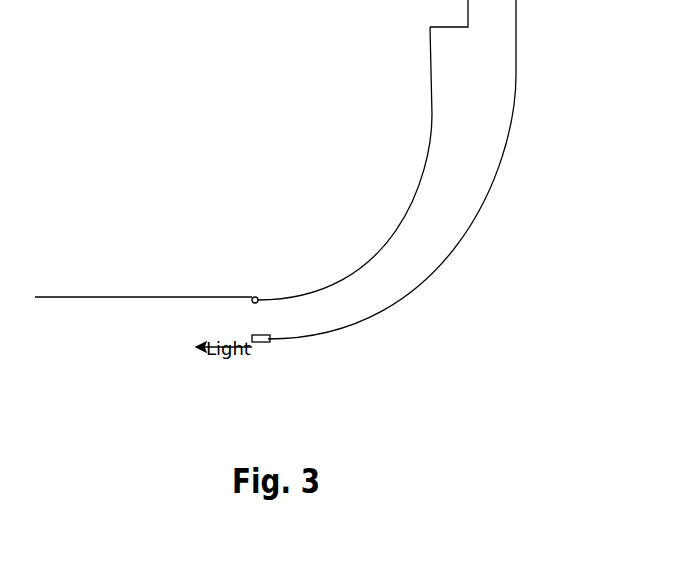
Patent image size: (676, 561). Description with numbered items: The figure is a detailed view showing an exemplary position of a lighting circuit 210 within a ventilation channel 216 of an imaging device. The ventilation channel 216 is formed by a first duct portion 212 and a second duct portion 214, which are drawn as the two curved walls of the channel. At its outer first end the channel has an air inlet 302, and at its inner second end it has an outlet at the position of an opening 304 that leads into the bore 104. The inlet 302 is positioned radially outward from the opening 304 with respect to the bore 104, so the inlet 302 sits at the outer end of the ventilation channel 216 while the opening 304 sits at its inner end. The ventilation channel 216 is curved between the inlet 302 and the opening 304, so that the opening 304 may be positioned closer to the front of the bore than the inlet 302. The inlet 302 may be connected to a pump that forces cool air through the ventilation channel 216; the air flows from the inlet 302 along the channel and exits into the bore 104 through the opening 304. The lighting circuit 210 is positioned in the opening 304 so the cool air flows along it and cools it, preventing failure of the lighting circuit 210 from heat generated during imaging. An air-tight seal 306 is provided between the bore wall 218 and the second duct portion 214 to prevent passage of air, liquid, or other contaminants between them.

The air inlet 302 is at (508, 24).
The first duct portion 212 is at (514, 85).
The second duct portion 214 is at (416, 180).
The ventilation channel 216 is at (462, 142).
The bore wall 218 is at (150, 297).
The air-tight seal 306 is at (258, 298).
The opening 304 is at (290, 330).
The bore 104 is at (137, 376).
The lighting circuit 210 is at (263, 342).